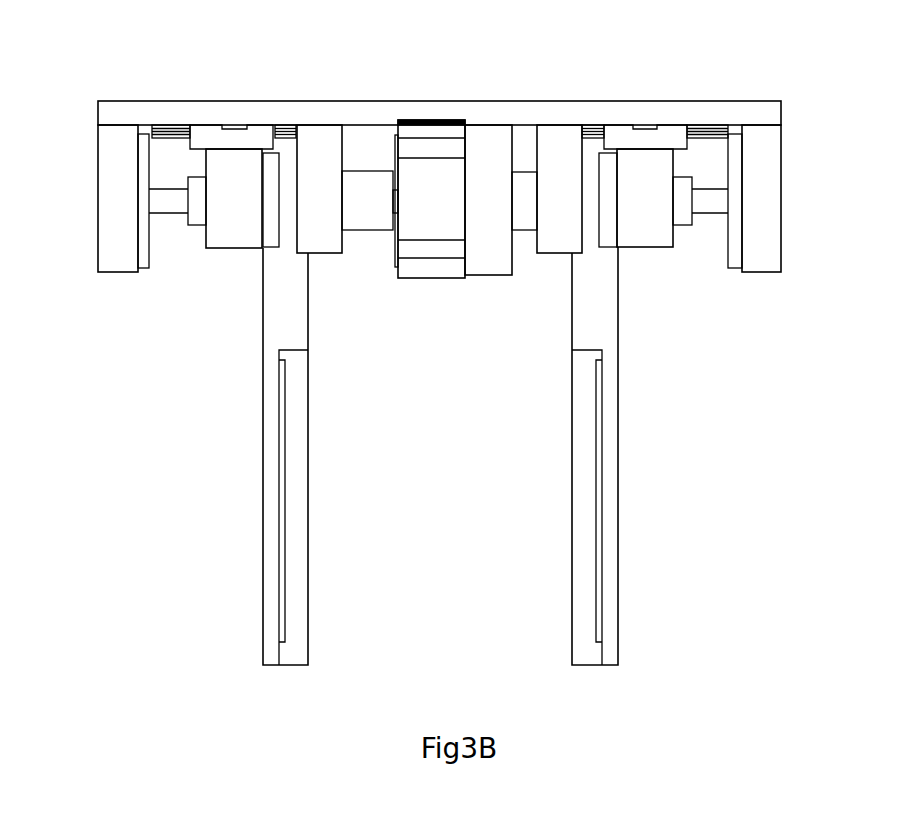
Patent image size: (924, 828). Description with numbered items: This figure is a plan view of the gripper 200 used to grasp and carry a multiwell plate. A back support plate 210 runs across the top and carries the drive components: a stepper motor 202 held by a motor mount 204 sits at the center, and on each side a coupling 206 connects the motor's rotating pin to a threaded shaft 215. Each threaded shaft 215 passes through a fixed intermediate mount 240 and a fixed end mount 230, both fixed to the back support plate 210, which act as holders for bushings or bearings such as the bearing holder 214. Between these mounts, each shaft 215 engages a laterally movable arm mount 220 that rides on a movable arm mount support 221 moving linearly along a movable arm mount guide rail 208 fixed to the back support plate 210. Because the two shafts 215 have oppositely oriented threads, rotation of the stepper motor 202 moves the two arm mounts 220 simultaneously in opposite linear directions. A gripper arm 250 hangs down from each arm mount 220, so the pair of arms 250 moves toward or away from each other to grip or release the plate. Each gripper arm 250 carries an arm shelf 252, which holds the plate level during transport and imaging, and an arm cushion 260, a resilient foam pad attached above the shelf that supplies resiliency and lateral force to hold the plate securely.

The gripper 200 is at (493, 105).
The stepper motor 202 is at (430, 199).
The motor mount 204 is at (488, 200).
The coupling 206 is at (367, 190).
The movable arm mount guide rail 208 is at (172, 130).
The back support plate 210 is at (250, 110).
The bearing holder 214 is at (143, 245).
The threaded shaft 215 is at (173, 198).
The laterally movable arm mount 220 is at (417, 142).
The movable arm mount support 221 is at (205, 135).
The fixed end mount 230 is at (439, 198).
The fixed intermediate mount 240 is at (439, 189).
The gripper arm 250 is at (440, 456).
The arm shelf 252 is at (302, 590).
The arm cushion 260 is at (285, 436).